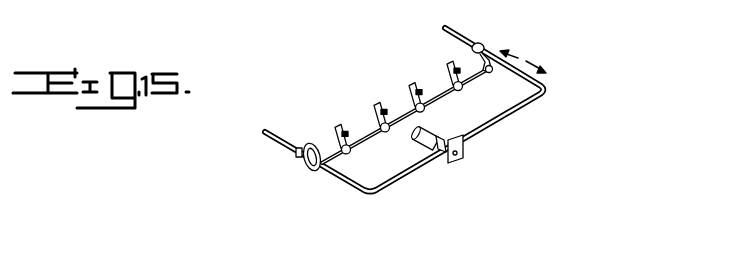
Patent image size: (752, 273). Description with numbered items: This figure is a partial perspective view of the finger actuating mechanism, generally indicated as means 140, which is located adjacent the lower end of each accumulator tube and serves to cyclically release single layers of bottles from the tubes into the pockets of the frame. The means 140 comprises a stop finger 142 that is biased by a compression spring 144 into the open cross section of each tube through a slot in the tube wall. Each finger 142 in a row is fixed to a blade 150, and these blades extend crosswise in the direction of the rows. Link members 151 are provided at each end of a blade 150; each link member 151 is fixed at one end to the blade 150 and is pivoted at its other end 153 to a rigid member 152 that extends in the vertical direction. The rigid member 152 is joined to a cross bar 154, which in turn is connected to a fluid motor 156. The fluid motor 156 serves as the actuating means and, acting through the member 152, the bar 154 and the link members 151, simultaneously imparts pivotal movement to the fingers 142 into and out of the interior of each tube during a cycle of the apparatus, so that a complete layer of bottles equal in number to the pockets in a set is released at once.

The means for cyclically releasing single layers of bottles 140 is at (530, 50).
The stop finger 142 is at (383, 124).
The compression spring 144 is at (348, 138).
The blade 150 is at (427, 93).
The link member 151 is at (308, 171).
The rigid member 152 is at (345, 187).
The pivot end of link member 153 is at (482, 47).
The cross bar 154 is at (490, 130).
The fluid motor 156 is at (419, 141).